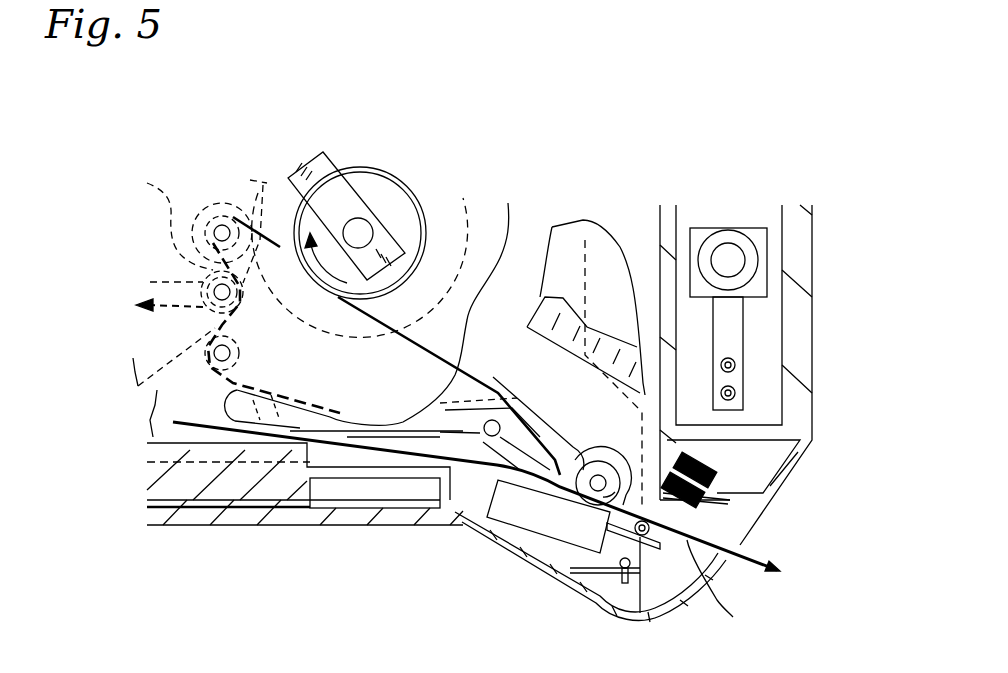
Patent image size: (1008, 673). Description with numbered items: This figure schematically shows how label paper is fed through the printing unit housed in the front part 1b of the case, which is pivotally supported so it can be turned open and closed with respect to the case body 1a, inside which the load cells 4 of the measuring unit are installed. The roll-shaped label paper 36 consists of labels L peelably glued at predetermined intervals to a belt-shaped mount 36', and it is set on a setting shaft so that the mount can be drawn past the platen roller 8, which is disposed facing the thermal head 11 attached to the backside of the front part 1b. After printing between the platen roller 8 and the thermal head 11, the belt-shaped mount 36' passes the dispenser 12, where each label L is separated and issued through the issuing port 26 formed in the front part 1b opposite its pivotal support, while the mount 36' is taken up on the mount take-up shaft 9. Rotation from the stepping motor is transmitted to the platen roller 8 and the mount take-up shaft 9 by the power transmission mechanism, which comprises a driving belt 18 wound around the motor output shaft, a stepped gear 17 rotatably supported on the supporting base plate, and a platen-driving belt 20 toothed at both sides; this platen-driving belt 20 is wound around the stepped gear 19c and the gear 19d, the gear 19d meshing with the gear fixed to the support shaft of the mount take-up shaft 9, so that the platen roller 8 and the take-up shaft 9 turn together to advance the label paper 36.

The mount take-up shaft 9 is at (393, 220).
The belt-shaped mount 36' is at (375, 302).
The stepped gear 19c is at (220, 216).
The platen-driving belt 20 is at (158, 220).
The driving belt 18 is at (167, 277).
The stepped gear 17 is at (200, 317).
The gear 19d is at (231, 353).
The front part 1b is at (322, 527).
The label L is at (343, 433).
The label paper 36 is at (461, 464).
The platen roller 8 is at (613, 460).
The thermal head 11 is at (543, 520).
The issuing port 26 is at (697, 572).
The dispenser 12 is at (687, 540).
The load cell 4 is at (760, 231).
The case body 1a is at (800, 323).